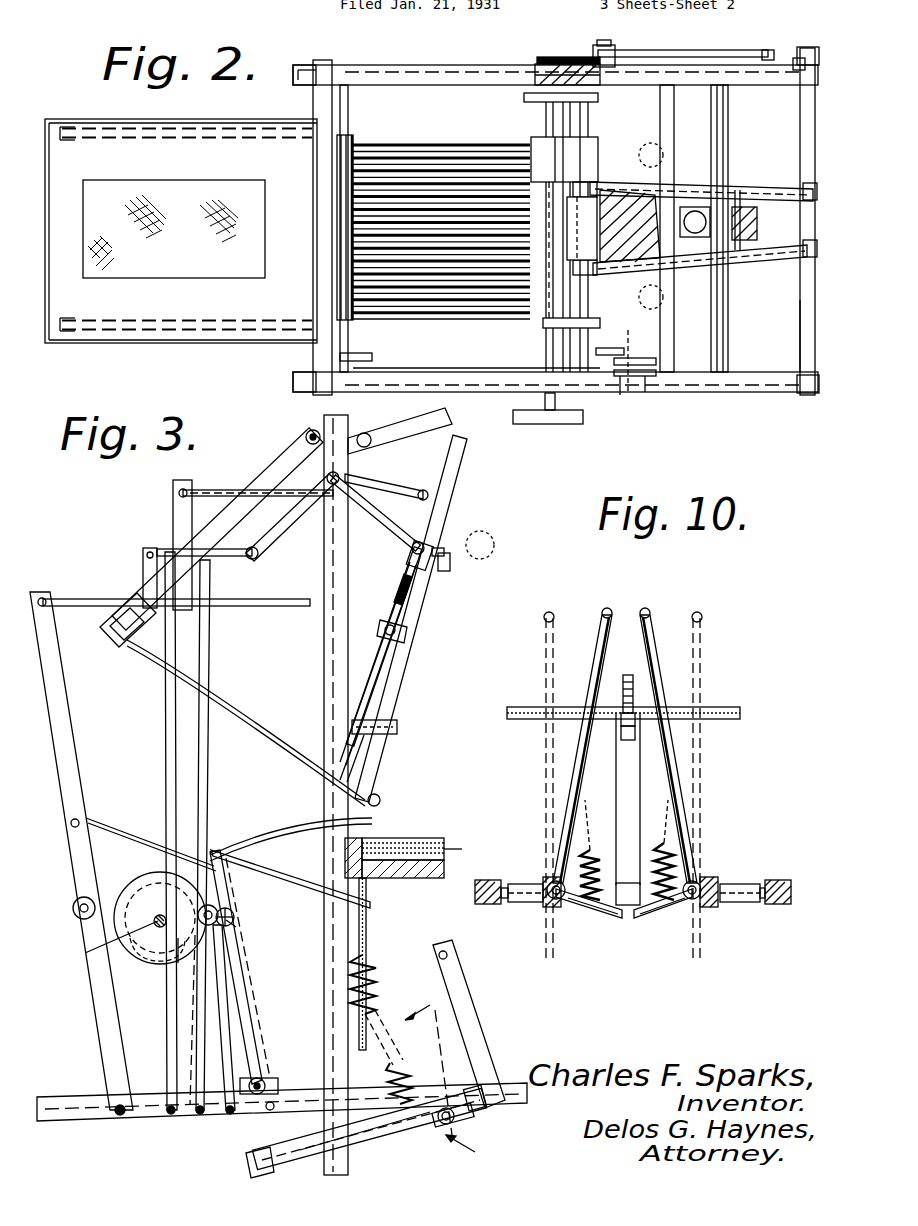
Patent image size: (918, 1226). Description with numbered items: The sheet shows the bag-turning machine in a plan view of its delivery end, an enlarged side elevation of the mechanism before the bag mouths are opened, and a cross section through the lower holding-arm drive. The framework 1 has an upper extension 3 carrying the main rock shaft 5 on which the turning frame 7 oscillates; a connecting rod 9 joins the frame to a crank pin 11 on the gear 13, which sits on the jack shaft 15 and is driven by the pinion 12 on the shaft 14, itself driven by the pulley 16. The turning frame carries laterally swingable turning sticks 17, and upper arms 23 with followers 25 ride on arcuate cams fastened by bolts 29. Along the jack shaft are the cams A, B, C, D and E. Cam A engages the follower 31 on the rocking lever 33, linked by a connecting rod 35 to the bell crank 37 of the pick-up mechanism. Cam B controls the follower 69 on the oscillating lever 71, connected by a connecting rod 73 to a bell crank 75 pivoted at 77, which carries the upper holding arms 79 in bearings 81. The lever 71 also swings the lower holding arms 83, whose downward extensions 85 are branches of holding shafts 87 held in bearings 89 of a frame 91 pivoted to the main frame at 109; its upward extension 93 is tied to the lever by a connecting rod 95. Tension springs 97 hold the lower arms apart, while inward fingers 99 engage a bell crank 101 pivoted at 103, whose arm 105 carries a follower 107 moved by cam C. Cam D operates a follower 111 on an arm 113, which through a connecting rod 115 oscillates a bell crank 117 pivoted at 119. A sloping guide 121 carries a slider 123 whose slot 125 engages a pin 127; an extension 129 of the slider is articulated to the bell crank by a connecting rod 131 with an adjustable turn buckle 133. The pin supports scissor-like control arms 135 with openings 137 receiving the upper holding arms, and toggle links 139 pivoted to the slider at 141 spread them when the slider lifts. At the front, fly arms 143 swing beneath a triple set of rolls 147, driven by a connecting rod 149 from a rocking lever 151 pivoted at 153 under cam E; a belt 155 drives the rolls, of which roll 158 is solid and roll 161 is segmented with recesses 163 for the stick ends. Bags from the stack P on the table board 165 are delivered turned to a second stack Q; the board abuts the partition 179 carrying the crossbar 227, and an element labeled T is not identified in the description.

In FIG. 2, the framework 1 is at (355, 72).
In FIG. 3, the framework 1 is at (324, 690).
In FIG. 10, the framework 1 is at (486, 880).
In FIG. 2, the upper extension 3 is at (798, 62).
In FIG. 2, the main rock shaft 5 is at (803, 333).
In FIG. 2, the turning frame 7 is at (803, 183).
In FIG. 2, the connecting rod 9 is at (728, 50).
In FIG. 2, the crank pin 11 is at (604, 40).
In FIG. 2, the pinion 12 is at (548, 57).
In FIG. 2, the gear 13 is at (578, 56).
In FIG. 2, the shaft 14 is at (548, 345).
In FIG. 2, the jack shaft 15 is at (608, 120).
In FIG. 3, the jack shaft 15 is at (85, 953).
In FIG. 10, the jack shaft 15 is at (740, 718).
In FIG. 2, the pulley 16 is at (515, 418).
In FIG. 2, the turning sticks 17 is at (652, 226).
In FIG. 2, the arm 23 is at (742, 190).
In FIG. 2, the followers 25 is at (760, 195).
In FIG. 2, the bolts 29 is at (695, 222).
In FIG. 3, the follower 31 is at (238, 910).
In FIG. 3, the rocking lever 33 is at (207, 776).
In FIG. 3, the connecting rod 35 is at (233, 490).
In FIG. 3, the bell crank 37 is at (410, 425).
In FIG. 3, the follower 69 is at (73, 910).
In FIG. 3, the oscillating lever 71 is at (62, 716).
In FIG. 3, the connecting rod 73 is at (90, 598).
In FIG. 3, the bell crank 75 is at (285, 465).
In FIG. 3, the pivot 77 is at (312, 430).
In FIG. 3, the upper holding arms 79 is at (222, 738).
In FIG. 3, the bearings 81 is at (133, 608).
In FIG. 3, the lower holding arms 83 is at (258, 842).
In FIG. 10, the lower holding arms 83 is at (643, 608).
In FIG. 3, the downward extensions 85 is at (258, 1033).
In FIG. 10, the downward extensions 85 is at (545, 665).
In FIG. 3, the holding shafts 87 is at (350, 1148).
In FIG. 10, the holding shafts 87 is at (548, 877).
In FIG. 3, the bearings 89 is at (275, 1166).
In FIG. 10, the bearings 89 is at (552, 900).
In FIG. 3, the frame 91 is at (395, 1140).
In FIG. 10, the frame 91 is at (525, 902).
In FIG. 3, the upward extension 93 is at (475, 1000).
In FIG. 3, the connecting rod 95 is at (282, 902).
In FIG. 3, the tension springs 97 is at (400, 1078).
In FIG. 10, the tension springs 97 is at (580, 858).
In FIG. 10, the fingers 99 is at (578, 905).
In FIG. 3, the bell crank 101 is at (262, 1060).
In FIG. 10, the bell crank 101 is at (626, 912).
In FIG. 3, the pivot 103 is at (240, 1118).
In FIG. 3, the arm 105 is at (250, 1003).
In FIG. 3, the follower 107 is at (220, 920).
In FIG. 3, the pivot 109 is at (447, 1130).
In FIG. 10, the pivot 109 is at (488, 904).
In FIG. 3, the follower 111 is at (180, 858).
In FIG. 3, the arm 113 is at (166, 780).
In FIG. 3, the connecting rod 115 is at (212, 556).
In FIG. 3, the bell crank 117 is at (362, 518).
In FIG. 3, the pivot 119 is at (282, 553).
In FIG. 3, the sloping guide 121 is at (445, 495).
In FIG. 3, the slider 123 is at (443, 548).
In FIG. 3, the slot 125 is at (484, 545).
In FIG. 3, the pin 127 is at (452, 562).
In FIG. 3, the extension 129 is at (405, 632).
In FIG. 3, the connecting rod 131 is at (410, 565).
In FIG. 3, the adjustable turn buckle 133 is at (410, 590).
In FIG. 3, the control arms 135 is at (400, 658).
In FIG. 3, the openings 137 is at (380, 795).
In FIG. 3, the toggle links 139 is at (392, 710).
In FIG. 3, the pivot 141 is at (398, 718).
In FIG. 2, the fly arms 143 is at (398, 283).
In FIG. 2, the triple set of rolls 147 is at (550, 152).
In FIG. 2, the connecting rod 149 is at (487, 368).
In FIG. 2, the rocking lever 151 is at (645, 378).
In FIG. 2, the pivot 153 is at (620, 395).
In FIG. 2, the belt 155 is at (540, 93).
In FIG. 2, the roll 158 is at (538, 165).
In FIG. 2, the roll 161 is at (602, 222).
In FIG. 2, the recesses 163 is at (588, 188).
In FIG. 3, the table board 165 is at (415, 878).
In FIG. 3, the partition 179 is at (366, 908).
In FIG. 3, the crossbar 227 is at (345, 878).
In FIG. 3, the cam A is at (132, 888).
In FIG. 3, the cam B is at (152, 968).
In FIG. 3, the cam C is at (178, 965).
In FIG. 10, the cam C is at (630, 676).
In FIG. 3, the cam D is at (128, 950).
In FIG. 2, the cam E is at (626, 348).
In FIG. 3, the stack of bags P is at (459, 851).
In FIG. 2, the second stack Q is at (98, 305).
In FIG. 3, the block T is at (418, 840).